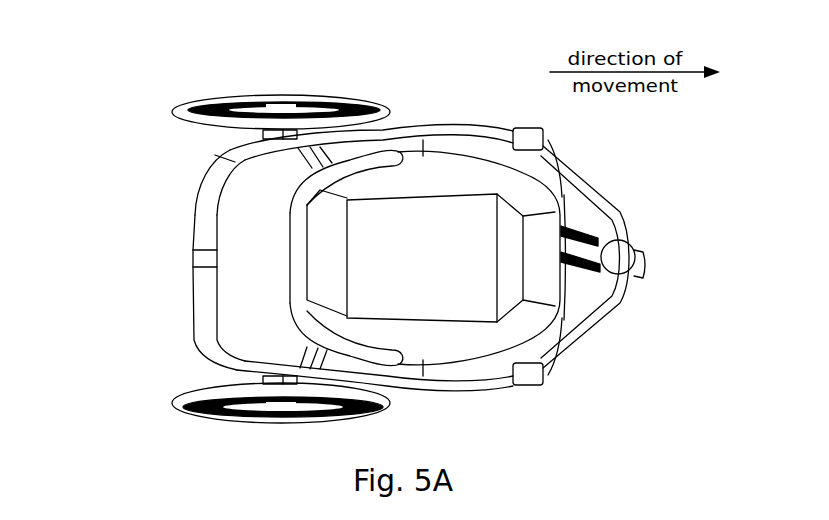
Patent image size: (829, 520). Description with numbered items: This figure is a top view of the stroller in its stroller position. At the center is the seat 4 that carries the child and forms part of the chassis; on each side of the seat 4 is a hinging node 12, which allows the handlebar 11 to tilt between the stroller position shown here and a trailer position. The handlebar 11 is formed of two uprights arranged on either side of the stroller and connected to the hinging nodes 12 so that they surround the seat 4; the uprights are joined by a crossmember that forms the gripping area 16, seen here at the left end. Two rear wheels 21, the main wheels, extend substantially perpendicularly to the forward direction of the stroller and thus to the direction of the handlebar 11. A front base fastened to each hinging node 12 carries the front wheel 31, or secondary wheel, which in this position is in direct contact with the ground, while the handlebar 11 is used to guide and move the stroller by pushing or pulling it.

The seat 4 is at (547, 220).
The handlebar 11 is at (427, 130).
The hinging node 12 is at (545, 147).
The gripping area 16 is at (199, 221).
The rear wheel 21 is at (250, 97).
The front wheel 31 is at (595, 230).